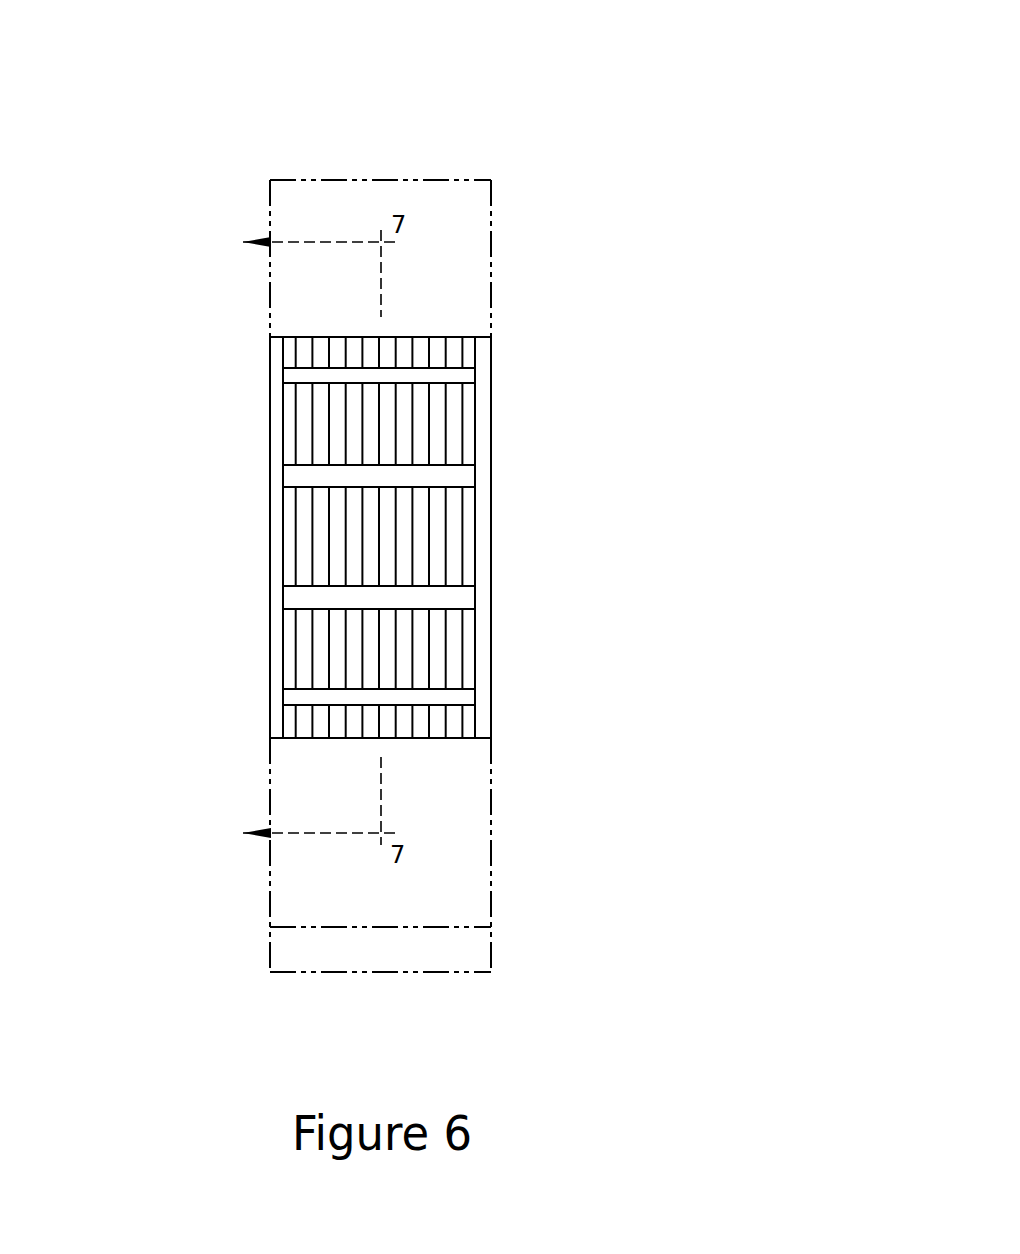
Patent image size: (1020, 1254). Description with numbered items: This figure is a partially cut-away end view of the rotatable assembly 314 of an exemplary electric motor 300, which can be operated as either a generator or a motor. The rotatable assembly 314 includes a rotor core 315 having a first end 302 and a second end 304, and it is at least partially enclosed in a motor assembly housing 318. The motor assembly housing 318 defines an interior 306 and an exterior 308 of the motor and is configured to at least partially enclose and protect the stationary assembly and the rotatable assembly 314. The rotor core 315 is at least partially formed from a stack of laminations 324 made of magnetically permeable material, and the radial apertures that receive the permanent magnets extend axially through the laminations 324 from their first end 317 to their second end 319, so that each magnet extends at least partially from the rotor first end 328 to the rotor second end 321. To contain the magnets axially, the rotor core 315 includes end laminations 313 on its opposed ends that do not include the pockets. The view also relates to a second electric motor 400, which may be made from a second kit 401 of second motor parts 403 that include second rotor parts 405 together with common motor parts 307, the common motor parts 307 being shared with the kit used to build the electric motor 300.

The electric motor 300 is at (193, 130).
The first end 302 is at (270, 280).
The second end 304 is at (491, 287).
The interior 306 is at (428, 318).
The common motor parts 307 is at (233, 755).
The exterior 308 is at (463, 72).
The end laminations 313 is at (270, 418).
The rotatable assembly 314 is at (525, 250).
The rotor core 315 is at (491, 643).
The first end 317 is at (378, 517).
The motor assembly housing 318 is at (335, 178).
The second end 319 is at (397, 517).
The rotor second end 321 is at (491, 540).
The laminations 324 is at (383, 578).
The rotor first end 328 is at (270, 537).
The second electric motor 400 is at (602, 75).
The second kit 401 is at (585, 983).
The second motor parts 403 is at (502, 782).
The second rotor parts 405 is at (220, 700).